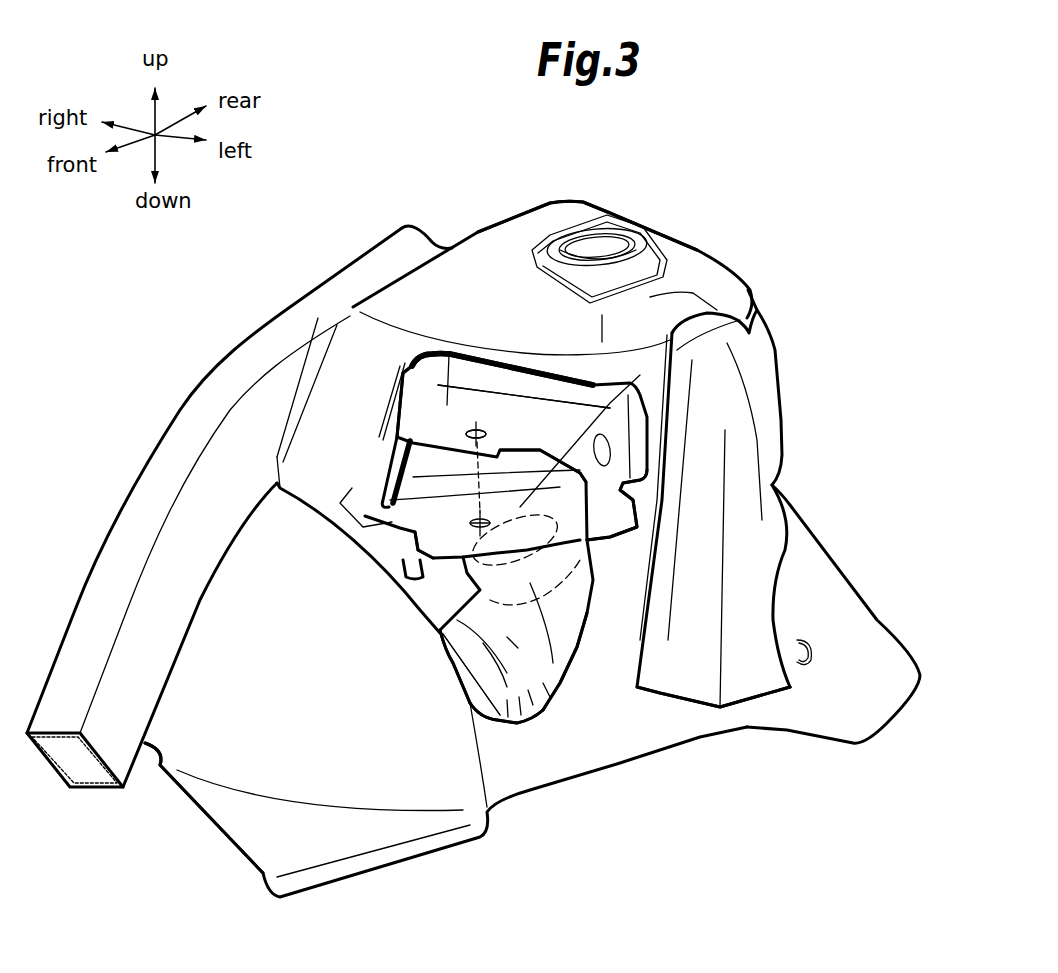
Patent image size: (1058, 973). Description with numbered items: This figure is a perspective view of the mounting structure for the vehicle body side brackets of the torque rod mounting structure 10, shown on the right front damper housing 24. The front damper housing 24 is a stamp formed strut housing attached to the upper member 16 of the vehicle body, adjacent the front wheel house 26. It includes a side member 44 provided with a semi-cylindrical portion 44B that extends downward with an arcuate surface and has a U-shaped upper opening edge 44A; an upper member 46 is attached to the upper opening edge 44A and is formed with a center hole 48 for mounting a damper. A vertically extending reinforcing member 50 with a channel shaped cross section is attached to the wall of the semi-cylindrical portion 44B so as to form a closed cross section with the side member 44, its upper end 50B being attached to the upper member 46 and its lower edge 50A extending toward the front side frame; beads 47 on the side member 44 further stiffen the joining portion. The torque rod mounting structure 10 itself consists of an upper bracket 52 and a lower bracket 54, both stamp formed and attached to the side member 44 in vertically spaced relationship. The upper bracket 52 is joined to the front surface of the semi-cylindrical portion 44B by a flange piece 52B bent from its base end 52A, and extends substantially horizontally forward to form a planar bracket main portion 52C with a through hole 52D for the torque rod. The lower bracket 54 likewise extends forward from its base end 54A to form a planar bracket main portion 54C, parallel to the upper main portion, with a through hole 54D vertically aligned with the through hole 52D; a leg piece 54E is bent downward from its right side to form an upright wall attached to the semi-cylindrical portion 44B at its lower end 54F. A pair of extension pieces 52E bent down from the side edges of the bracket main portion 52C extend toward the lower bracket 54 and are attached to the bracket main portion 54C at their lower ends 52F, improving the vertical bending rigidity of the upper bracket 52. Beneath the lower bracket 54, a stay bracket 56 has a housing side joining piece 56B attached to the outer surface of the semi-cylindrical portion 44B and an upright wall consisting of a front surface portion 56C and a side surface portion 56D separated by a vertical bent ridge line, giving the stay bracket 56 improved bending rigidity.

The torque rod mounting structure 10 is at (380, 398).
The upper member 16 is at (262, 383).
The front damper housing 24 is at (690, 228).
The front wheel house 26 is at (230, 747).
The side member 44 is at (672, 727).
The upper opening edge 44A is at (418, 297).
The semi-cylindrical portion 44B is at (628, 643).
The upper member 46 is at (507, 277).
The beads 47 is at (550, 600).
The center hole 48 is at (603, 252).
The reinforcing member 50 is at (752, 558).
The lower edge of side panel 50A is at (753, 677).
The upper end 50B is at (717, 310).
The upper bracket 52 is at (581, 392).
The base end 52A is at (492, 372).
The flange piece 52B is at (540, 383).
The bracket main portion 52C is at (447, 352).
The through hole 52D is at (487, 432).
The extension pieces 52E is at (607, 528).
The lower end 52F is at (607, 493).
The lower bracket 54 is at (447, 574).
The base end 54A is at (468, 434).
The bracket main portion 54C is at (560, 478).
The through hole 54D is at (472, 523).
The leg piece 54E is at (416, 552).
The lower end 54F is at (408, 578).
The stay bracket 56 is at (510, 712).
The housing side joining piece 56B is at (503, 722).
The front surface portion 56C is at (470, 693).
The side surface portion 56D is at (527, 680).